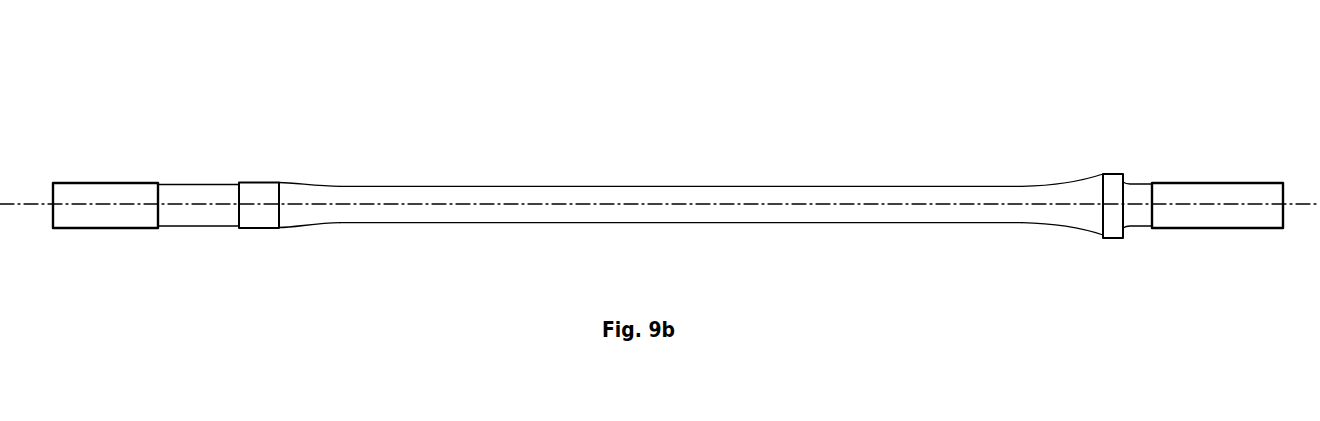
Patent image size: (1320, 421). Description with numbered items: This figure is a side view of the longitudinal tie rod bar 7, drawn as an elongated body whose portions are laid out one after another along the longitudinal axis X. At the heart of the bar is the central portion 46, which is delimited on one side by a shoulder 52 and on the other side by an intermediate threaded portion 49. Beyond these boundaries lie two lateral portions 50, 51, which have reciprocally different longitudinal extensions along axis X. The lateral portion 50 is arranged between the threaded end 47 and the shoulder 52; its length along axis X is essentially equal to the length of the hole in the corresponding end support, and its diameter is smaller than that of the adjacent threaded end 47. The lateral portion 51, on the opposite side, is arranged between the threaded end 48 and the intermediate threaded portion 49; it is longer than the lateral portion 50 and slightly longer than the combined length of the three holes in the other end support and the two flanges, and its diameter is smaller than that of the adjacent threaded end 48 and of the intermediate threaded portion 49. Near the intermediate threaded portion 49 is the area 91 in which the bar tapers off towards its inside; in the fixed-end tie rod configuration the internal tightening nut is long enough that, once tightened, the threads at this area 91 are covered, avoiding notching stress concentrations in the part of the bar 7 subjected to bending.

The longitudinal bar 7 is at (659, 185).
The central portion 46 is at (606, 194).
The threaded end 47 is at (1208, 182).
The threaded end 48 is at (113, 182).
The intermediate threaded portion 49 is at (260, 182).
The lateral portion 50 is at (1138, 213).
The lateral portion 51 is at (199, 210).
The shoulder 52 is at (1125, 175).
The area in which the bar tapers off 91 is at (308, 178).
The axis X is at (827, 204).